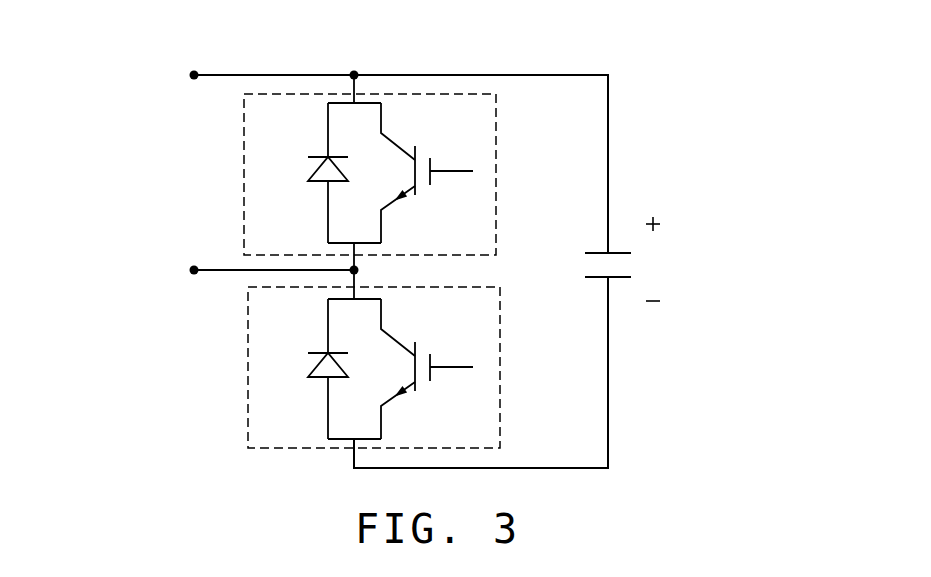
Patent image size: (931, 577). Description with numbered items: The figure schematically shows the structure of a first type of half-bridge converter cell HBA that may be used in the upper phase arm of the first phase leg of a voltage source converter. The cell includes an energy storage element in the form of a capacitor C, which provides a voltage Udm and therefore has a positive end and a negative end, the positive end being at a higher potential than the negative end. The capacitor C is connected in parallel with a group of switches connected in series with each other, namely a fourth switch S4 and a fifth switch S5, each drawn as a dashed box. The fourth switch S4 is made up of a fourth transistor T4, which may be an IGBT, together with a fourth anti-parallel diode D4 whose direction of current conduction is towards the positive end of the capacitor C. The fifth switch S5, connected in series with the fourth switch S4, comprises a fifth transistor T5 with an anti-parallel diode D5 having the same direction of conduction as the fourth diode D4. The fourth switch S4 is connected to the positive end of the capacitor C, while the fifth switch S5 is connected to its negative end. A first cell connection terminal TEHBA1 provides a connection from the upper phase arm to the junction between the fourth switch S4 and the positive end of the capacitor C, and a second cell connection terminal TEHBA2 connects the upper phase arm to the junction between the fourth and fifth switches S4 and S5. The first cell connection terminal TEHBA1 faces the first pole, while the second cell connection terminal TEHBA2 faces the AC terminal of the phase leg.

The half-bridge converter cell HBA is at (660, 117).
The first cell connection terminal TEHBA1 is at (204, 79).
The second cell connection terminal TEHBA2 is at (204, 262).
The fourth switch S4 is at (496, 202).
The fifth switch S5 is at (500, 407).
The fourth anti-parallel diode D4 is at (311, 173).
The fifth anti-parallel diode D5 is at (307, 369).
The fourth transistor T4 is at (427, 173).
The fifth transistor T5 is at (427, 369).
The capacitor C is at (586, 263).
The voltage Udm is at (669, 259).